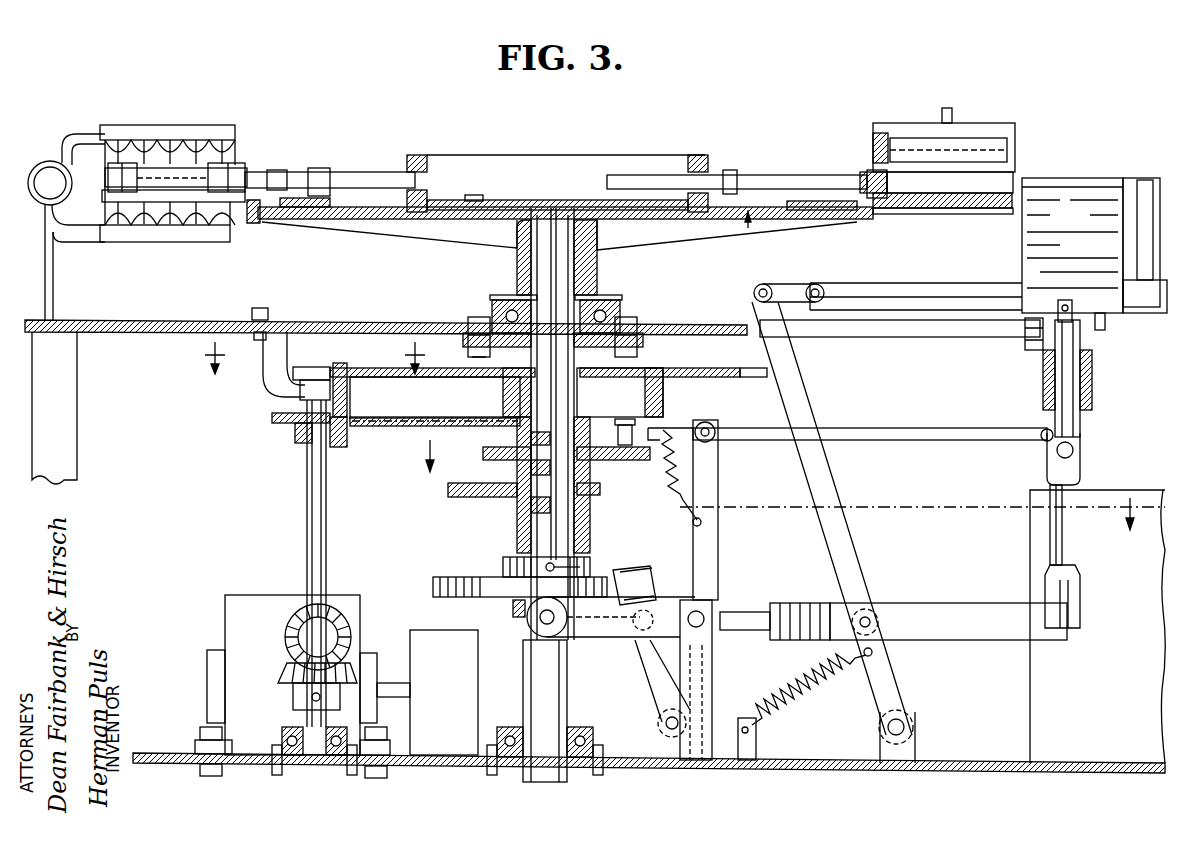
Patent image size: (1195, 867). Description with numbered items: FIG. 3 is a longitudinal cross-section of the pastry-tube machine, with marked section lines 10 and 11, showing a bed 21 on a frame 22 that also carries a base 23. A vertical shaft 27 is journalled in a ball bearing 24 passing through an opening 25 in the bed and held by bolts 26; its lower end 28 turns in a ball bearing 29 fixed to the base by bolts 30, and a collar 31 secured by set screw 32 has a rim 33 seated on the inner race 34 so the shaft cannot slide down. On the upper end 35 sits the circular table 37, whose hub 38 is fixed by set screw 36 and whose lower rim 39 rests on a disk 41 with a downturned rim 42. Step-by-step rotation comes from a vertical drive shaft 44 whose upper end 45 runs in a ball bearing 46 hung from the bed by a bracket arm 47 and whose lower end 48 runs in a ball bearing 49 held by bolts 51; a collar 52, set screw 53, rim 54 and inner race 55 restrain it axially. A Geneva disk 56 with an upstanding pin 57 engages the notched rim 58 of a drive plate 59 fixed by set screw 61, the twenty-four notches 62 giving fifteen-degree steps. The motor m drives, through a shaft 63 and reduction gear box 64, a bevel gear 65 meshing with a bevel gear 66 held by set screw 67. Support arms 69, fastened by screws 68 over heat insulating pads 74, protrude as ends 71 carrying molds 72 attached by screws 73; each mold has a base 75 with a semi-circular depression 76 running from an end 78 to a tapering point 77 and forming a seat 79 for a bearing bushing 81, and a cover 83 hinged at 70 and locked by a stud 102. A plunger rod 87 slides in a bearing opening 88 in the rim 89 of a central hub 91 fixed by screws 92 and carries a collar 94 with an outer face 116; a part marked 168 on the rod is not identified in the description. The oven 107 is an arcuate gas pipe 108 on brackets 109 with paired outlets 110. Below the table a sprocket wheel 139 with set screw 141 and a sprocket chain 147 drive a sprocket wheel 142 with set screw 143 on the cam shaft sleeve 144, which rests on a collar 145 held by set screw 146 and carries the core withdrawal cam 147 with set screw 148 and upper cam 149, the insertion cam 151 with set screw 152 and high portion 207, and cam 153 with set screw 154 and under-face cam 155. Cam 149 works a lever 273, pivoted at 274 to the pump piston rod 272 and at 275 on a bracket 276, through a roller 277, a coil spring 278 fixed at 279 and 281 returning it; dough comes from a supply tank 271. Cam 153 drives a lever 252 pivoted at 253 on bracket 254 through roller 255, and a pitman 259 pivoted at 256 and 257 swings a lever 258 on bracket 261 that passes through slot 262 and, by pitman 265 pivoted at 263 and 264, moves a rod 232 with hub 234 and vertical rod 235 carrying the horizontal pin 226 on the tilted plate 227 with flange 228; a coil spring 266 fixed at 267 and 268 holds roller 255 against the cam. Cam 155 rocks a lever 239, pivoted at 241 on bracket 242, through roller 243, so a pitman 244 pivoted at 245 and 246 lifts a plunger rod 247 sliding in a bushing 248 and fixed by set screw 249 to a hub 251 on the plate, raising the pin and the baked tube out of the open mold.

The section line 10 is at (772, 480).
The section line 11 is at (305, 345).
The bed 21 is at (154, 320).
The frame 22 is at (60, 375).
The base 23 is at (155, 753).
The ball bearing 24 is at (622, 316).
The opening 25 is at (498, 320).
The bolts 26 is at (470, 330).
The vertical shaft 27 is at (597, 275).
The lower end of vertical shaft 28 is at (545, 770).
The ball bearing 29 is at (595, 735).
The bolts 30 is at (598, 775).
The collar 31 is at (578, 727).
The set screw 32 is at (508, 727).
The downwardly extending rim 33 is at (592, 727).
The inner race 34 is at (494, 775).
The upper end of vertical shaft 35 is at (597, 234).
The set screw 36 is at (512, 265).
The circular table 37 is at (748, 228).
The hub 38 is at (597, 258).
The lower rim 39 is at (620, 300).
The disk 41 is at (236, 140).
The downturned rim 42 is at (518, 295).
The vertical drive shaft 44 is at (307, 487).
The upper end of drive shaft 45 is at (347, 440).
The ball bearing 46 is at (347, 390).
The bracket arm 47 is at (263, 372).
The lower end of drive shaft 48 is at (312, 757).
The ball bearing 49 is at (282, 742).
The bolts 51 is at (272, 765).
The collar 52 is at (350, 765).
The set screw 53 is at (285, 728).
The downwardly extending rim 54 is at (292, 760).
The inner race 55 is at (330, 760).
The disk 56 is at (303, 375).
The upstanding pin 57 is at (262, 340).
The notched rim 58 is at (300, 378).
The drive plate 59 is at (705, 368).
The set screw 61 is at (510, 390).
The notches 62 is at (280, 370).
The shaft 63 is at (392, 683).
The reduction gear box 64 is at (225, 608).
The bevel gear 65 is at (300, 612).
The bevel gear 66 is at (290, 667).
The set screw 67 is at (293, 690).
The screws 68 is at (320, 168).
The support arms 69 is at (252, 222).
The hinge 70 is at (118, 168).
The protruding ends 71 is at (196, 192).
The mold 72 is at (962, 160).
The screws 73 is at (222, 202).
The heat insulating pad 74 is at (280, 170).
The base of mold 75 is at (145, 190).
The semi-circular depression 76 is at (940, 210).
The tapering point 77 is at (1005, 208).
The end of block 78 is at (885, 210).
The semi-circular seat 79 is at (862, 210).
The bearing bushing 81 is at (868, 174).
The cover 83 is at (172, 172).
The plunger rod 87 is at (360, 172).
The bearing openings 88 is at (430, 178).
The upstanding rim 89 is at (415, 156).
The circular hub 91 is at (448, 200).
The screws 92 is at (484, 196).
The collar 94 is at (745, 186).
The stud 102 is at (947, 108).
The oven 107 is at (38, 212).
The arcuate gas pipe 108 is at (38, 163).
The brackets 109 is at (53, 293).
The gas outlets 110 is at (130, 125).
The outer face of collar 116 is at (728, 170).
The sprocket wheel 139 is at (280, 421).
The set screw 141 is at (296, 438).
The sprocket wheel 142 is at (640, 412).
The set screw 143 is at (530, 437).
The cam shaft 144 is at (598, 412).
The collar 145 is at (518, 617).
The set screw 146 is at (513, 608).
The plunger rod withdrawal cam 147 is at (425, 417).
The set screw 148 is at (530, 467).
The cam 149 is at (605, 492).
The plunger rod insertion cam 151 is at (590, 505).
The set screw 152 is at (530, 505).
The cam 153 is at (466, 567).
The set screw 154 is at (590, 562).
The cam 155 is at (433, 588).
The rod end 168 is at (740, 175).
The high portion 207 is at (448, 490).
The horizontal pin 226 is at (1050, 178).
The plate 227 is at (1098, 200).
The flange 228 is at (1123, 218).
The rod 232 is at (960, 290).
The hub 234 is at (1155, 313).
The vertical rod 235 is at (1160, 190).
The lever 239 is at (762, 605).
The pivot 241 is at (745, 595).
The bracket 242 is at (712, 670).
The roller 243 is at (560, 636).
The pitman 244 is at (1062, 548).
The pivotal connection 245 is at (1080, 617).
The pivotal connection 246 is at (1073, 450).
The vertical plunger rod 247 is at (1080, 415).
The bushing 248 is at (1043, 385).
The set screw 249 is at (1068, 300).
The hub 251 is at (1105, 320).
The lever 252 is at (645, 662).
The lower end 253 is at (660, 700).
The bracket 254 is at (648, 748).
The roller 255 is at (650, 575).
The pivot 256 is at (650, 600).
The pivot 257 is at (872, 616).
The lever 258 is at (830, 475).
The pitman 259 is at (778, 603).
The bracket 261 is at (915, 740).
The slot 262 is at (868, 337).
The pivot 263 is at (754, 290).
The pivot 264 is at (822, 287).
The pitman 265 is at (792, 284).
The coil spring 266 is at (808, 668).
The spring attachment 267 is at (873, 653).
The spring anchor 268 is at (748, 743).
The supply tank 271 is at (1030, 548).
The piston rod 272 is at (1047, 457).
The lever 273 is at (898, 428).
The pivot 274 is at (1040, 432).
The pivot 275 is at (718, 428).
The bracket 276 is at (718, 480).
The roller 277 is at (670, 408).
The coil spring 278 is at (680, 465).
The spring attachment 279 is at (698, 425).
The spring attachment 281 is at (702, 520).
The motor m is at (444, 692).